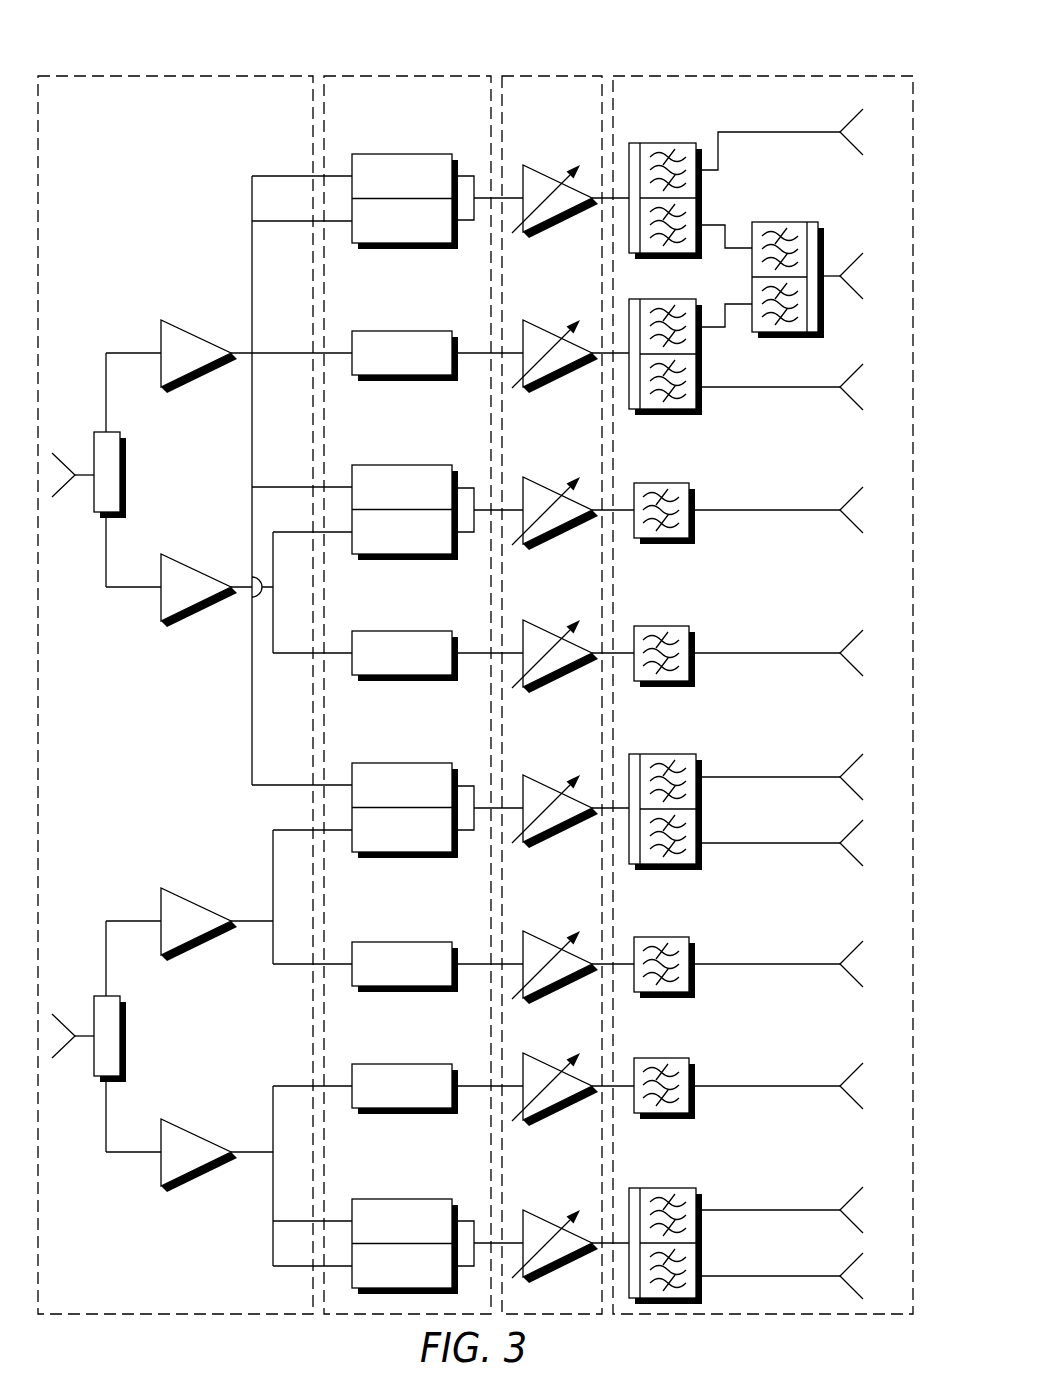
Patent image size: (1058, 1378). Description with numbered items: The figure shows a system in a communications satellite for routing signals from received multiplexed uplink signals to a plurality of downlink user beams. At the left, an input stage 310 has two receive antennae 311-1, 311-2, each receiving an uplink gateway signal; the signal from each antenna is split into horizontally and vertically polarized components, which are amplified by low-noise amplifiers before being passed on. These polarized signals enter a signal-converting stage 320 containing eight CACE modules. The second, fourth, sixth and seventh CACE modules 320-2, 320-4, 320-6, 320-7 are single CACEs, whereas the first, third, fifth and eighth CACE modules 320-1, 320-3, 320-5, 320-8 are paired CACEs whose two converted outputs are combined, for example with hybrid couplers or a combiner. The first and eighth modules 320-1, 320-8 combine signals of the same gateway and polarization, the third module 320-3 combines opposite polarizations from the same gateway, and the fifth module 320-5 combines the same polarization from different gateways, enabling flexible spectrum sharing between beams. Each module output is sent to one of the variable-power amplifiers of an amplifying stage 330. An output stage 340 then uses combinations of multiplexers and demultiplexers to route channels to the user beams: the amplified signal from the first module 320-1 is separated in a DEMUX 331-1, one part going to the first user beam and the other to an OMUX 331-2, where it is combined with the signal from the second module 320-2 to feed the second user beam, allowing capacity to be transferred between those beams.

The input stage 310 is at (168, 76).
The receive antenna 311-1 is at (62, 520).
The receive antenna 311-2 is at (62, 1080).
The signal-converting stage 320 is at (400, 76).
The first CACE module 320-1 is at (392, 154).
The second CACE module 320-2 is at (392, 331).
The third CACE module 320-3 is at (392, 465).
The fourth CACE module 320-4 is at (392, 631).
The fifth CACE module 320-5 is at (392, 763).
The sixth CACE module 320-6 is at (392, 942).
The seventh CACE module 320-7 is at (392, 1064).
The eighth CACE module 320-8 is at (392, 1199).
The amplifying stage 330 is at (572, 76).
The DEMUX 331-1 is at (668, 143).
The OMUX 331-2 is at (797, 222).
The output stage 340 is at (795, 76).